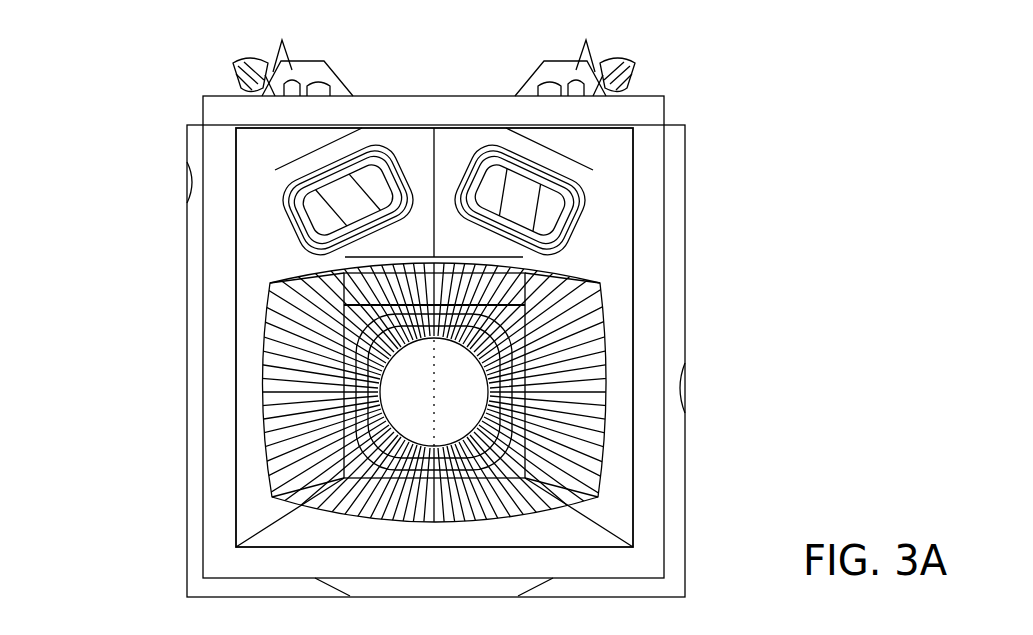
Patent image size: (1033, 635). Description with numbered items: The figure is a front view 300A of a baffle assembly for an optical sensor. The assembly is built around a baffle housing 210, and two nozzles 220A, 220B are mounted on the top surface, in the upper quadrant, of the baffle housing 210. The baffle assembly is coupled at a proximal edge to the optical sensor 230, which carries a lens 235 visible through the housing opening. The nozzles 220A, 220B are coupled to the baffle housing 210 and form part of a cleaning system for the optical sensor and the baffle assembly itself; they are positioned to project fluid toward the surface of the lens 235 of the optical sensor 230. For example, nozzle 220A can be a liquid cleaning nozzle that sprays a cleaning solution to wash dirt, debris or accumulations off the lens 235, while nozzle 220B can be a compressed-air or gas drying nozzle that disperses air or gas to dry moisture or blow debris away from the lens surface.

The front view 300A is at (148, 62).
The baffle housing 210 is at (203, 262).
The nozzle 220A is at (348, 78).
The nozzle 220B is at (540, 72).
The optical sensor 230 is at (601, 291).
The lens 235 is at (595, 493).